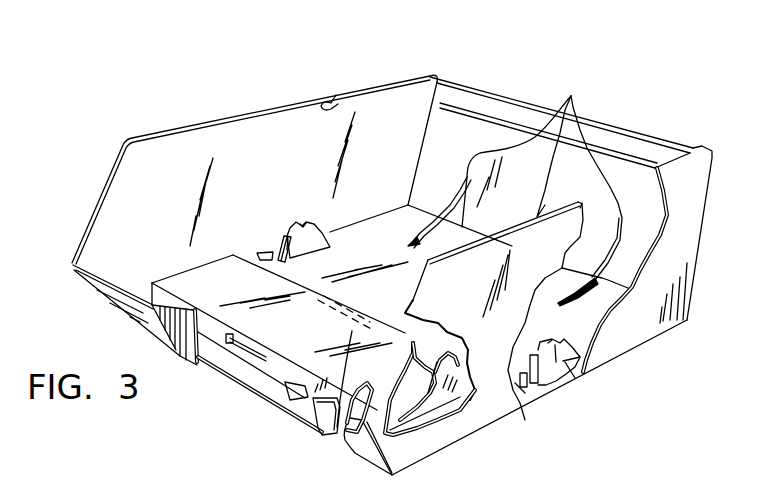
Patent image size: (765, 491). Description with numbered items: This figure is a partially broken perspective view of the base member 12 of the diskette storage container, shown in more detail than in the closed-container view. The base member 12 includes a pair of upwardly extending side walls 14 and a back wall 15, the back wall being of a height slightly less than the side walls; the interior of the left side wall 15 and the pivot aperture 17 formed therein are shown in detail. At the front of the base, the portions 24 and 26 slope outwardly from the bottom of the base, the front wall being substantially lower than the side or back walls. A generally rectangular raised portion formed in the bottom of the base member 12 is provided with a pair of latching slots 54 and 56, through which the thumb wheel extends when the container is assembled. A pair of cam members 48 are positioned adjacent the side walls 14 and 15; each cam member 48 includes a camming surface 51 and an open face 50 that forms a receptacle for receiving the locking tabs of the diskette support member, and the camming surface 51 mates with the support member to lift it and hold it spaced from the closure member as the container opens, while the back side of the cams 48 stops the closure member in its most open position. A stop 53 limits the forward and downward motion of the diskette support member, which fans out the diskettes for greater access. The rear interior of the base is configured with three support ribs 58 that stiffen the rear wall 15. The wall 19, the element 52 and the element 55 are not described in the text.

The base member 12 is at (520, 76).
The side wall 14 is at (630, 342).
The side wall 15 is at (635, 143).
The pivot aperture 17 is at (336, 95).
The rear wall 19 is at (232, 122).
The outwardly sloping portion 24 is at (116, 310).
The outwardly sloping portion 26 is at (362, 455).
The cam member 48 is at (318, 225).
The open face 50 is at (282, 240).
The camming surface 51 is at (298, 224).
The catch 52 is at (286, 236).
The stop 53 is at (250, 255).
The latching slot 54 is at (230, 340).
The track 55 is at (337, 427).
The latching slot 56 is at (320, 432).
The support rib 58 is at (572, 97).